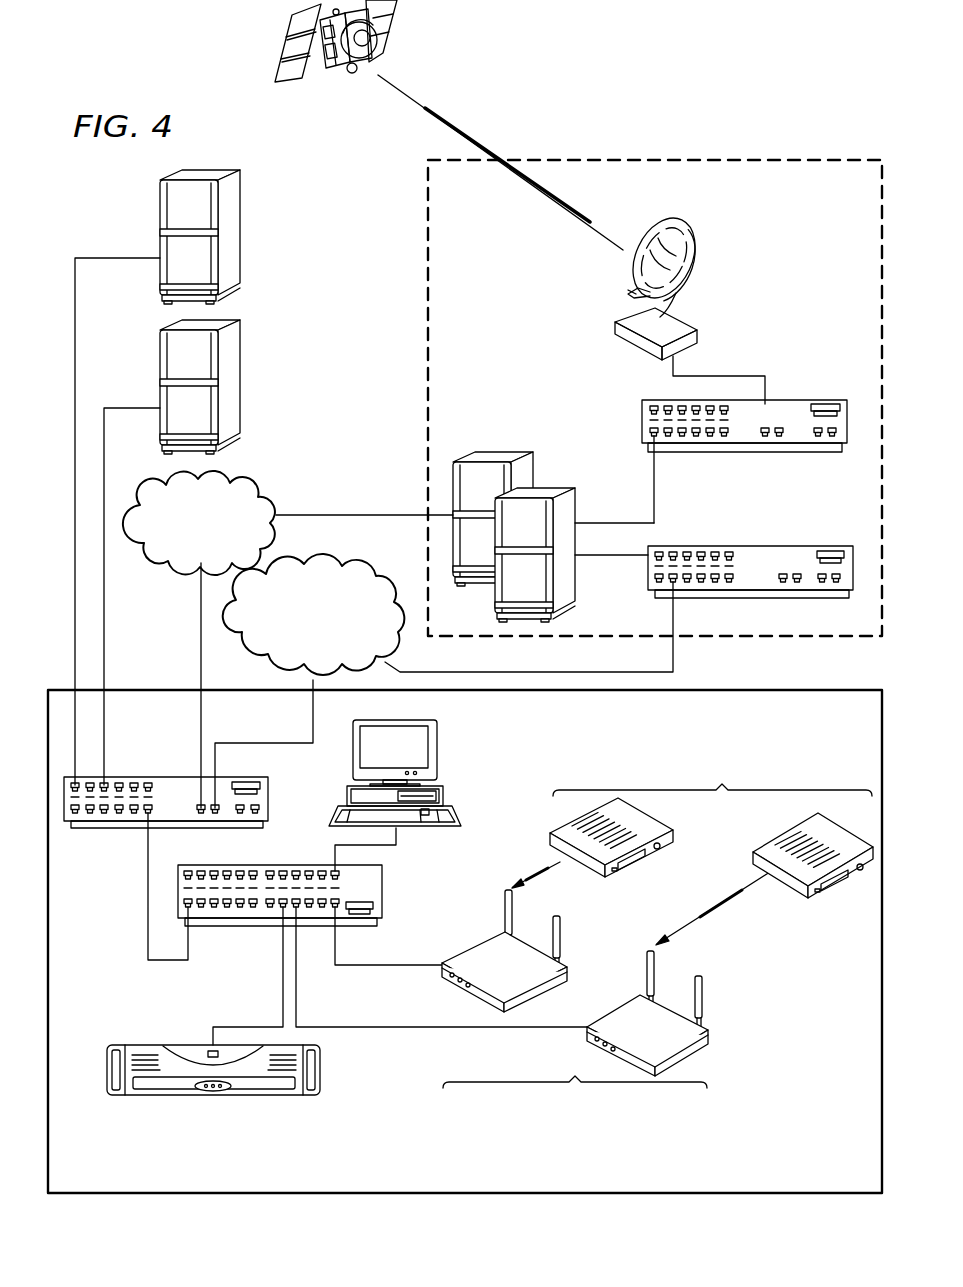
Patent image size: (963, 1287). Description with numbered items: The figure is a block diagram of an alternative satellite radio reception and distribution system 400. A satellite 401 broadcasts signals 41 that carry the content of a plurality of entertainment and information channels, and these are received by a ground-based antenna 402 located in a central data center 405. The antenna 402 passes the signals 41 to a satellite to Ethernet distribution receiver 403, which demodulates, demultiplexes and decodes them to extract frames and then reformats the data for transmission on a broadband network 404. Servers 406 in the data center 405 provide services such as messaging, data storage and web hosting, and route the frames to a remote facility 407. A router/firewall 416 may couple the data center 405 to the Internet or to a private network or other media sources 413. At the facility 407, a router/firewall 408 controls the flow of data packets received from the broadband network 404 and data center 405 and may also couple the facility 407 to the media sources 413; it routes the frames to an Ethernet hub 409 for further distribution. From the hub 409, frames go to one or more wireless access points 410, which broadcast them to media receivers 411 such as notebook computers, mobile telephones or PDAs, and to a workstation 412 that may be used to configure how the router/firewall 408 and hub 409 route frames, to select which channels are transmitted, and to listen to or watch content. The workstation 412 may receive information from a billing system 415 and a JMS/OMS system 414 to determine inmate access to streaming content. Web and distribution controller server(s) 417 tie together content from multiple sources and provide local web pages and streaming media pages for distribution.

The signals 41 is at (465, 148).
The satellite radio reception and distribution system 400 is at (796, 124).
The satellite 401 is at (283, 53).
The ground-based antenna 402 is at (700, 264).
The satellite to Ethernet distribution receiver 403 is at (797, 400).
The broadband network 404 is at (262, 484).
The central data center 405 is at (422, 231).
The servers 406 is at (505, 452).
The remote facility 407 is at (170, 686).
The router/firewall 408 is at (108, 829).
The Ethernet hub 409 is at (232, 928).
The wireless access points 410 is at (606, 1012).
The media receivers 411 is at (711, 803).
The workstation 412 is at (440, 757).
The Internet and private network media sources 413 is at (372, 569).
The JMS/OMS system 414 is at (236, 221).
The billing system 415 is at (236, 369).
The router/firewall 416 is at (808, 546).
The web and distribution controller server(s) 417 is at (178, 1096).